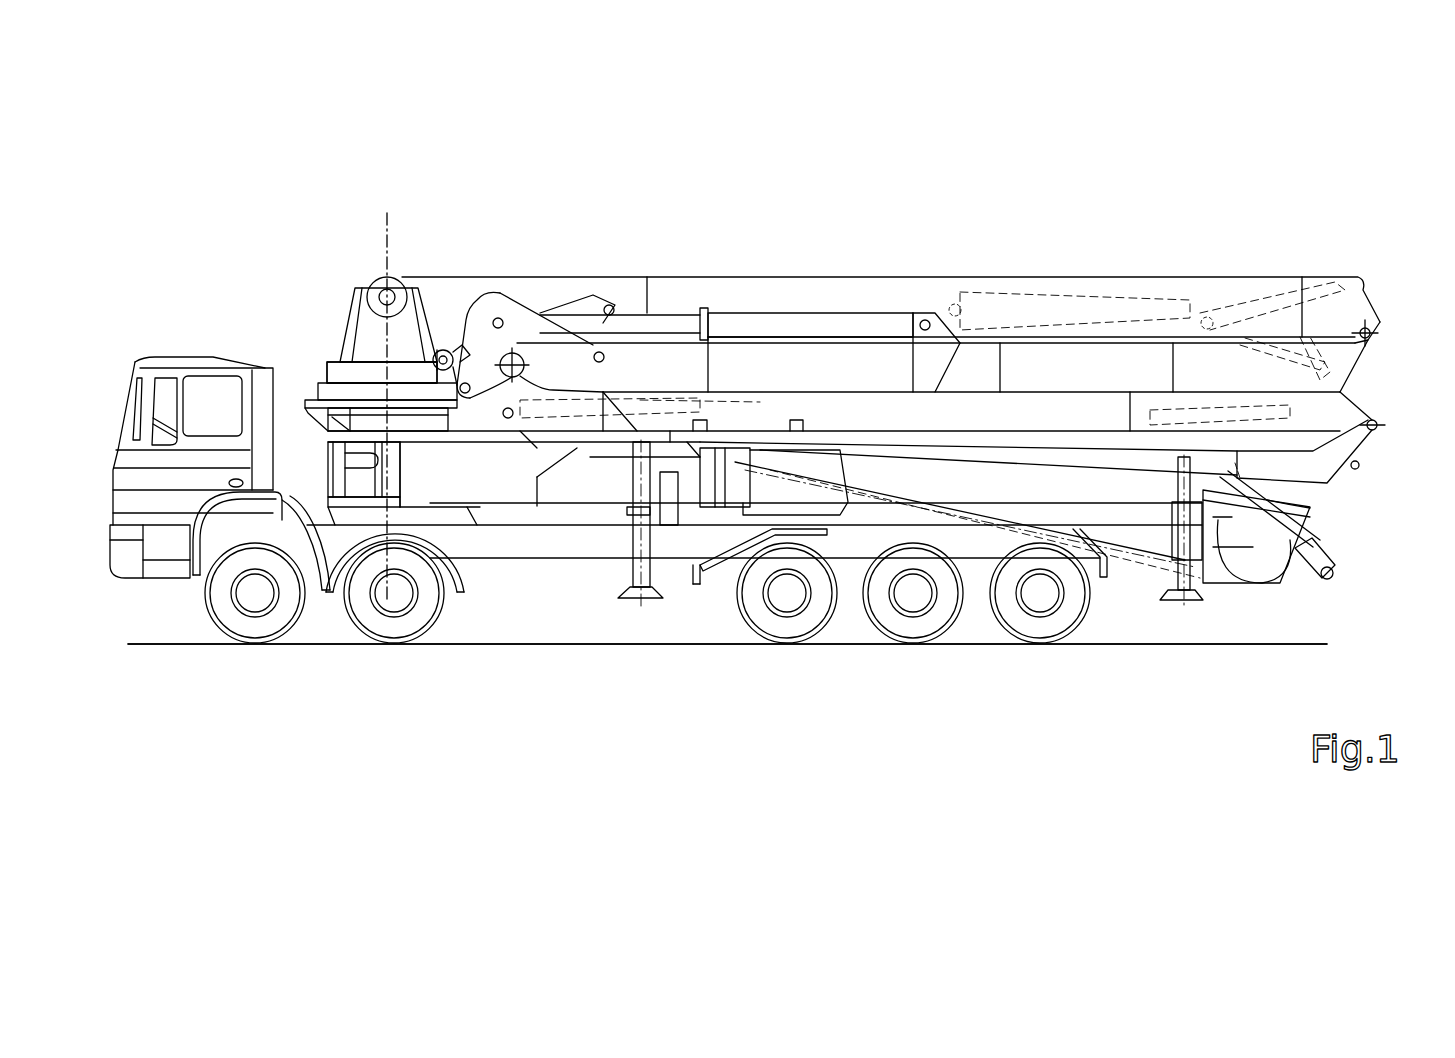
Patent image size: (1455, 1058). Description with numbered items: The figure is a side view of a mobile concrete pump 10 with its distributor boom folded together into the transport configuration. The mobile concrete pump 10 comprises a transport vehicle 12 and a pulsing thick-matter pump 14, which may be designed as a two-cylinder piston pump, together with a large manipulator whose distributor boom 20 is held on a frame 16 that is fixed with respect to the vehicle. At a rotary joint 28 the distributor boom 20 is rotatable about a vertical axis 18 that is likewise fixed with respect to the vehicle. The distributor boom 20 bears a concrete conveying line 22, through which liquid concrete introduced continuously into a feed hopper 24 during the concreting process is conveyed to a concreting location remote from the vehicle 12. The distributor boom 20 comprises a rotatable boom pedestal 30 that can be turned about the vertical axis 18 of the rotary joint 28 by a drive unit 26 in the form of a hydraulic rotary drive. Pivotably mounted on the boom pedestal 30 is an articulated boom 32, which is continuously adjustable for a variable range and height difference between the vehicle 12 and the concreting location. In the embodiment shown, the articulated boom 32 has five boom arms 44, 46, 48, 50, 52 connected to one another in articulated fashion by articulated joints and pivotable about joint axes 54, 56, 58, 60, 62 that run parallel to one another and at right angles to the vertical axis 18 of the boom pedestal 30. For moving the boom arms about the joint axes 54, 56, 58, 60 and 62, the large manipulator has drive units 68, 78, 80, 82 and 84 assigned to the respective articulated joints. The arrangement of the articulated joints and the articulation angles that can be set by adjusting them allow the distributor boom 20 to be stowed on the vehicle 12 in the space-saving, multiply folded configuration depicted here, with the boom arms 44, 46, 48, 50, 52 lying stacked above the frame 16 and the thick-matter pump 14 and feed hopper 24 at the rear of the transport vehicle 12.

The mobile concrete pump 10 is at (1396, 355).
The transport vehicle 12 is at (125, 382).
The pulsing thick-matter pump 14 is at (1148, 566).
The frame 16 is at (442, 480).
The vertical axis 18 is at (387, 228).
The distributor boom 20 is at (1300, 273).
The concrete conveying line 22 is at (1260, 490).
The feed hopper 24 is at (1262, 585).
The drive unit 26 is at (348, 397).
The rotary joint 28 is at (315, 388).
The boom pedestal 30 is at (347, 322).
The articulated boom 32 is at (767, 273).
The boom arm 44 is at (670, 290).
The boom arm 46 is at (972, 355).
The boom arm 48 is at (1008, 410).
The boom arm 50 is at (1040, 440).
The boom arm 52 is at (577, 450).
The joint axis 54 is at (400, 290).
The joint axis 56 is at (1366, 328).
The joint axis 58 is at (512, 365).
The joint axis 60 is at (1382, 414).
The joint axis 62 is at (508, 418).
The drive unit 68 is at (1187, 415).
The drive unit 78 is at (580, 305).
The drive unit 80 is at (1107, 310).
The drive unit 82 is at (665, 400).
The drive unit 84 is at (562, 422).